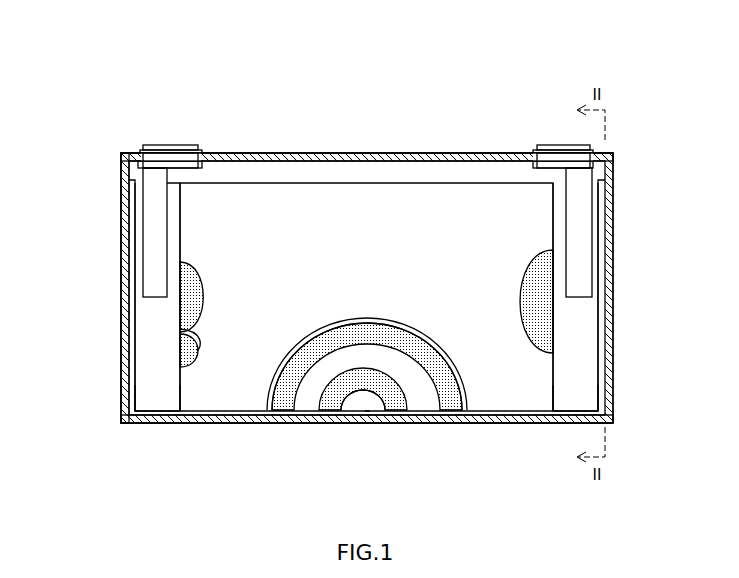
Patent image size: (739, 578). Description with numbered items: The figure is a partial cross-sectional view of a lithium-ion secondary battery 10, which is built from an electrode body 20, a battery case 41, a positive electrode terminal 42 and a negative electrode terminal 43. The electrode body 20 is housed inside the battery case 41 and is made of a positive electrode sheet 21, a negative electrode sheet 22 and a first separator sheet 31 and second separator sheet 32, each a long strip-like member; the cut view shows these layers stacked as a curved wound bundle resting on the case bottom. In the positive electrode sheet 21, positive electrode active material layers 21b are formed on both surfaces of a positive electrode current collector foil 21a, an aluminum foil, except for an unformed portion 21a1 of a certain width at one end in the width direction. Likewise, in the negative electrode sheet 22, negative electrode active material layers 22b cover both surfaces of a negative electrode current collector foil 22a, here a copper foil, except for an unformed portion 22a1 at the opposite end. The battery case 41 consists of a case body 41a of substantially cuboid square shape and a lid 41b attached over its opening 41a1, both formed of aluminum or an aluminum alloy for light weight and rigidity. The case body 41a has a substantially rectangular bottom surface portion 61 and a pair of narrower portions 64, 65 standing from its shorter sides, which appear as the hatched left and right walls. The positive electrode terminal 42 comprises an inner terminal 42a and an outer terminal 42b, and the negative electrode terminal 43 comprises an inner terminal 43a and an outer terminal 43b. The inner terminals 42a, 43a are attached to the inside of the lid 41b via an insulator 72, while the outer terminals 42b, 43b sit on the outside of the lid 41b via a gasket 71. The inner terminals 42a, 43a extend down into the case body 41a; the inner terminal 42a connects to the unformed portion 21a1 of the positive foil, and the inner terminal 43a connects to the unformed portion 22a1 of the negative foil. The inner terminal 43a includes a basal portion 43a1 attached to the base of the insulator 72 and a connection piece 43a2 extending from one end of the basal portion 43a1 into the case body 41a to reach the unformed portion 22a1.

The lithium-ion secondary battery 10 is at (430, 92).
The electrode body 20 is at (294, 180).
The positive electrode sheet 21 is at (333, 399).
The positive electrode current collector foil 21a is at (152, 351).
The unformed portion 21a1 is at (155, 395).
The positive electrode active material layers 21b is at (202, 292).
The negative electrode sheet 22 is at (283, 403).
The negative electrode current collector foil 22a is at (584, 342).
The unformed portion 22a1 is at (588, 393).
The negative electrode active material layers 22b is at (197, 352).
The first separator sheet 31 is at (310, 398).
The second separator sheet 32 is at (364, 391).
The battery case 41 is at (640, 222).
The case body 41a is at (119, 222).
The opening 41a1 is at (128, 151).
The lid 41b is at (367, 152).
The positive electrode terminal 42 is at (134, 179).
The inner terminal 42a is at (139, 170).
The outer terminal 42b is at (189, 144).
The negative electrode terminal 43 is at (597, 178).
The inner terminal 43a is at (597, 225).
The basal portion 43a1 is at (549, 170).
The connection piece 43a2 is at (583, 262).
The outer terminal 43b is at (544, 144).
The bottom surface portion 61 is at (460, 425).
The narrower portion 64 is at (119, 290).
The narrower portion 65 is at (612, 290).
The gasket 71 is at (143, 151).
The insulator 72 is at (203, 173).